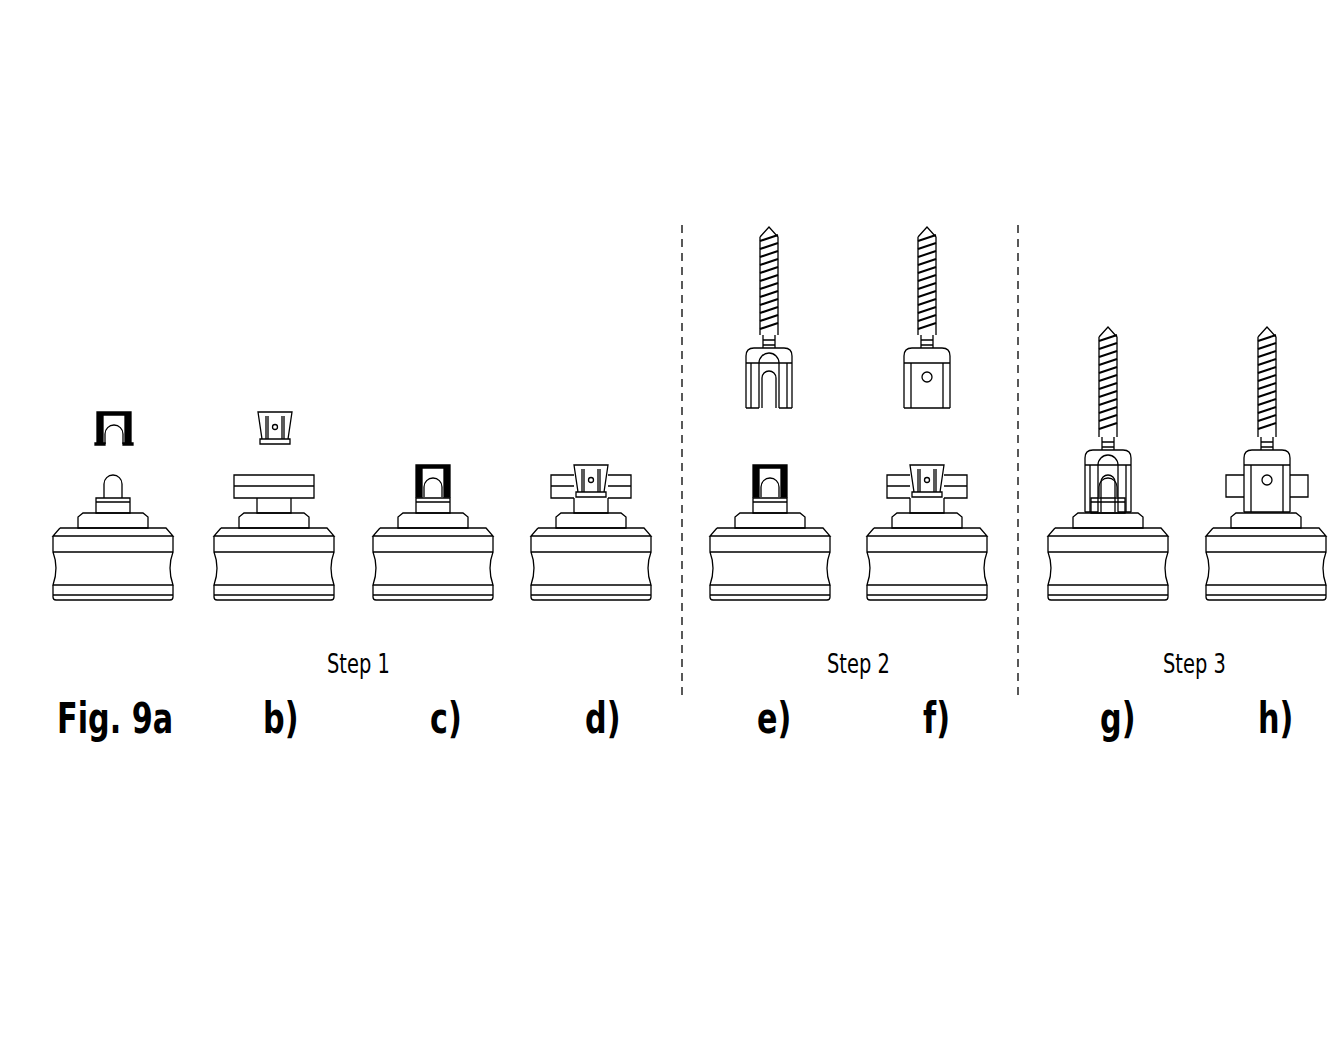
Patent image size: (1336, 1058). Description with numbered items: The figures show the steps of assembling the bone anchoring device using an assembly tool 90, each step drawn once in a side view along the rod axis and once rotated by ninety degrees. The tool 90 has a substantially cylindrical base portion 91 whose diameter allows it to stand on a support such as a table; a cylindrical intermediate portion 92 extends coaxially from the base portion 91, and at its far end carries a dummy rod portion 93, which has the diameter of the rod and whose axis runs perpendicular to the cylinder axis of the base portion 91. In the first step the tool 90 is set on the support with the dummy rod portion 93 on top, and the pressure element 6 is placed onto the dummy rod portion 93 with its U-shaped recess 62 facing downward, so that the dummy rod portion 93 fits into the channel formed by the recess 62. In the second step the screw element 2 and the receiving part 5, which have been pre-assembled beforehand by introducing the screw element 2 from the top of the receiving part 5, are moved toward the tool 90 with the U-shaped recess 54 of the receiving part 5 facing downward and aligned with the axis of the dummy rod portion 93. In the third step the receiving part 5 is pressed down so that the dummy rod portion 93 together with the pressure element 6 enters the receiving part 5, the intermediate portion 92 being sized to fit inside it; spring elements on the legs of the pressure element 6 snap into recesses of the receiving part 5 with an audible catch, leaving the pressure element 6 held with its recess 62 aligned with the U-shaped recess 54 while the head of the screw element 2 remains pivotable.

In FIG. 9e, the screw element 2 is at (782, 297).
In FIG. 9f, the screw element 2 is at (940, 297).
In FIG. 9g, the screw element 2 is at (1117, 382).
In FIG. 9h, the screw element 2 is at (1254, 353).
In FIG. 9e, the receiving part 5 is at (790, 378).
In FIG. 9f, the receiving part 5 is at (947, 378).
In FIG. 9g, the receiving part 5 is at (1128, 472).
In FIG. 9h, the receiving part 5 is at (1288, 468).
In FIG. 9e, the U-shaped recess 54 is at (760, 398).
In FIG. 9a, the pressure element 6 is at (97, 411).
In FIG. 9b, the pressure element 6 is at (258, 411).
In FIG. 9c, the pressure element 6 is at (419, 464).
In FIG. 9d, the pressure element 6 is at (579, 464).
In FIG. 9e, the pressure element 6 is at (752, 464).
In FIG. 9f, the pressure element 6 is at (910, 464).
In FIG. 9a, the recess 62 is at (119, 426).
In FIG. 9a, the tool 90 is at (83, 606).
In FIG. 9a, the base portion 91 is at (130, 572).
In FIG. 9b, the base portion 91 is at (274, 556).
In FIG. 9c, the base portion 91 is at (447, 577).
In FIG. 9d, the base portion 91 is at (600, 577).
In FIG. 9e, the base portion 91 is at (777, 577).
In FIG. 9f, the base portion 91 is at (932, 577).
In FIG. 9g, the base portion 91 is at (1107, 577).
In FIG. 9h, the base portion 91 is at (1265, 577).
In FIG. 9a, the intermediate portion 92 is at (131, 502).
In FIG. 9g, the intermediate portion 92 is at (1110, 500).
In FIG. 9a, the dummy rod portion 93 is at (124, 486).
In FIG. 9b, the dummy rod portion 93 is at (297, 481).
In FIG. 9c, the dummy rod portion 93 is at (418, 490).
In FIG. 9d, the dummy rod portion 93 is at (558, 482).
In FIG. 9e, the dummy rod portion 93 is at (755, 490).
In FIG. 9f, the dummy rod portion 93 is at (955, 482).
In FIG. 9g, the dummy rod portion 93 is at (1093, 490).
In FIG. 9h, the dummy rod portion 93 is at (1233, 478).